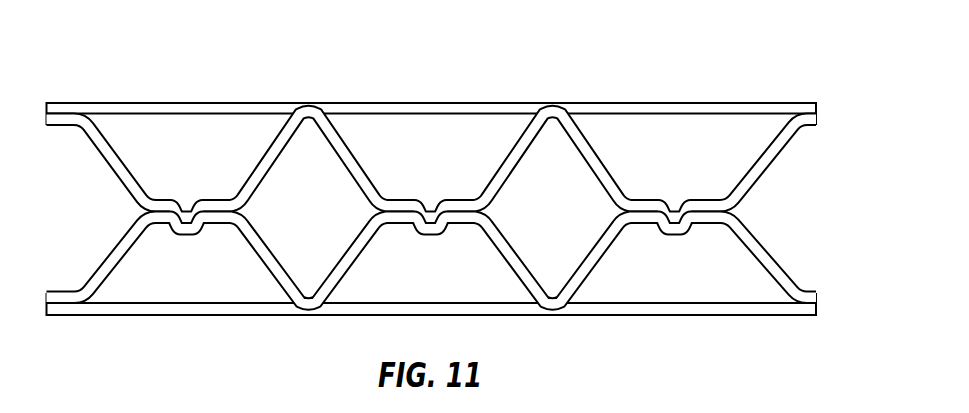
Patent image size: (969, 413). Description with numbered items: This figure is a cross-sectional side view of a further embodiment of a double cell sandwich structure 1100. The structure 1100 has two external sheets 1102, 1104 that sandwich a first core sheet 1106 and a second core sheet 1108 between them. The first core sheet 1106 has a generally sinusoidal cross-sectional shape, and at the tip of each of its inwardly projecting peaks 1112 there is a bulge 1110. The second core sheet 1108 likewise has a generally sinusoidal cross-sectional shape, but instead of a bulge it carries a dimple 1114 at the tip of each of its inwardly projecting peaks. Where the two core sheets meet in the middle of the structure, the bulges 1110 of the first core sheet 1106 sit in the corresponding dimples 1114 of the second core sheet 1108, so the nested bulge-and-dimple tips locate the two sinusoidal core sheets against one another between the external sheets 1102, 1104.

The double cell sandwich structure 1100 is at (462, 191).
The external sheet 1102 is at (673, 103).
The external sheet 1104 is at (673, 316).
The first core sheet 1106 is at (762, 157).
The second core sheet 1108 is at (762, 258).
The bulge 1110 is at (676, 189).
The inwardly projecting peak 1112 is at (205, 132).
The dimple 1114 is at (205, 283).